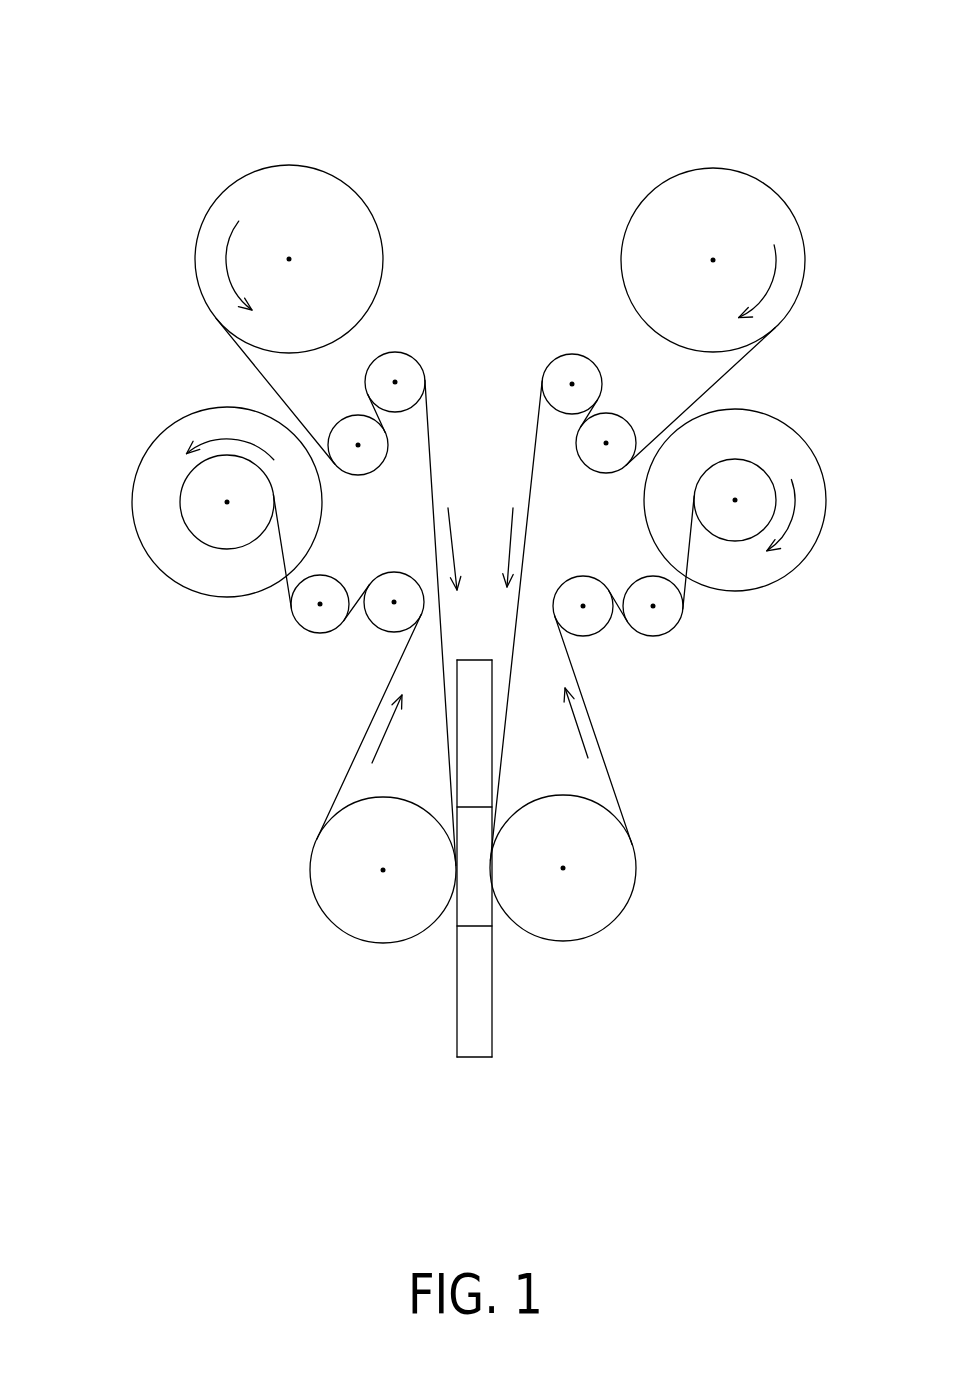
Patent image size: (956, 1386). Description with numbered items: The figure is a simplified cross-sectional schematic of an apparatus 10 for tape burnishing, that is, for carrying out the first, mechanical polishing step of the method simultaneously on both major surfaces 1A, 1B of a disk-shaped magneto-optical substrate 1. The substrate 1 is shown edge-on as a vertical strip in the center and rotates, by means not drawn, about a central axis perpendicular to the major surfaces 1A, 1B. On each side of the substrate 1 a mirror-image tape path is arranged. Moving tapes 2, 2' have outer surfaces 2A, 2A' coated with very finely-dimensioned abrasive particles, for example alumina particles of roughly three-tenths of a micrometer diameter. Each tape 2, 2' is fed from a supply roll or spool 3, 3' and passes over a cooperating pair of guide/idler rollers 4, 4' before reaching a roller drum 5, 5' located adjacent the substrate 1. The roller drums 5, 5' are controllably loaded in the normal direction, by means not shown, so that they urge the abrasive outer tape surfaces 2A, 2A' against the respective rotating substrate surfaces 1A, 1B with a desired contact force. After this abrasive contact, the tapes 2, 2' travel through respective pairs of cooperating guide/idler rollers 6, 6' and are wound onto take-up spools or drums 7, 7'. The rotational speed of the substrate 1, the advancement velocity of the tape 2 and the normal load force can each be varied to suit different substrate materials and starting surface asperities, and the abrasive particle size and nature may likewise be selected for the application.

The apparatus 10 is at (220, 132).
The MO substrate 1 is at (473, 1063).
The major surface 1A is at (457, 1013).
The major surface 1B is at (493, 1010).
The moving tape 2 is at (247, 391).
The moving tape 2' is at (723, 397).
The outer surface of tape 2A is at (365, 601).
The outer surface of tape 2A' is at (601, 598).
The supply roll 3 is at (296, 230).
The supply roll 3' is at (725, 231).
The guide/idler rollers 4 is at (406, 327).
The guide/idler rollers 4' is at (572, 328).
The roller drum 5 is at (355, 876).
The roller drum 5' is at (591, 868).
The guide/idler rollers 6 is at (320, 639).
The guide/idler rollers 6' is at (659, 649).
The take-up spool 7 is at (207, 516).
The take-up spool 7' is at (735, 537).